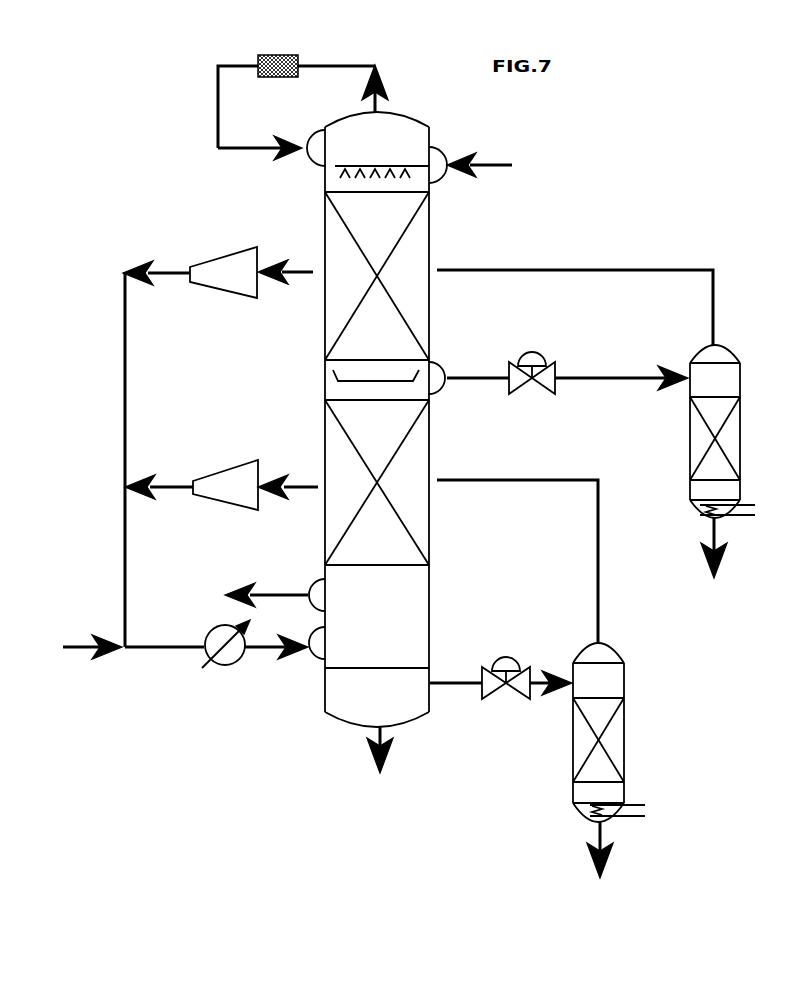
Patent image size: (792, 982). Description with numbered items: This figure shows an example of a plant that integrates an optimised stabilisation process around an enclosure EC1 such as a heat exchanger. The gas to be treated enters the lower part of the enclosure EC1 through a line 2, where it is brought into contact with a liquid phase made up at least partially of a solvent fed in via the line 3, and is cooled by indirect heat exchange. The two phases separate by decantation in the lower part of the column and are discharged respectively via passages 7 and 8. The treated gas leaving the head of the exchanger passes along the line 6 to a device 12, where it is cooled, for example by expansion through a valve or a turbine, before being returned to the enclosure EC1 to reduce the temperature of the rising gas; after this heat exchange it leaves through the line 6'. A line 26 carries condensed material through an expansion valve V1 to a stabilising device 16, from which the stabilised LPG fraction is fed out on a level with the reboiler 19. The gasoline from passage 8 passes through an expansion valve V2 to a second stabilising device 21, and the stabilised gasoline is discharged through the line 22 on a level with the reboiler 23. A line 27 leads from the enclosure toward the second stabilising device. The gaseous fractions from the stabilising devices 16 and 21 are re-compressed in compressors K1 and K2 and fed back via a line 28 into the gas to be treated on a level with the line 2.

The enclosure EC1 is at (395, 419).
The device 12 is at (296, 107).
The line 6 is at (377, 88).
The line 3 is at (479, 172).
The compressor K1 is at (218, 266).
The compressor K2 is at (221, 476).
The line 28 is at (114, 459).
The line 2 is at (185, 647).
The line 6' is at (266, 589).
The line to separator 16 26 is at (575, 293).
The expansion valve V1 is at (567, 384).
The stabilising device 16 is at (726, 431).
The reboiler 19 is at (742, 541).
The line to separator 21 27 is at (517, 561).
The passage 8 is at (456, 671).
The expansion valve V2 is at (527, 688).
The second stabilising device 21 is at (613, 732).
The reboiler 23 is at (637, 815).
The line 22 is at (614, 850).
The passage 7 is at (386, 752).